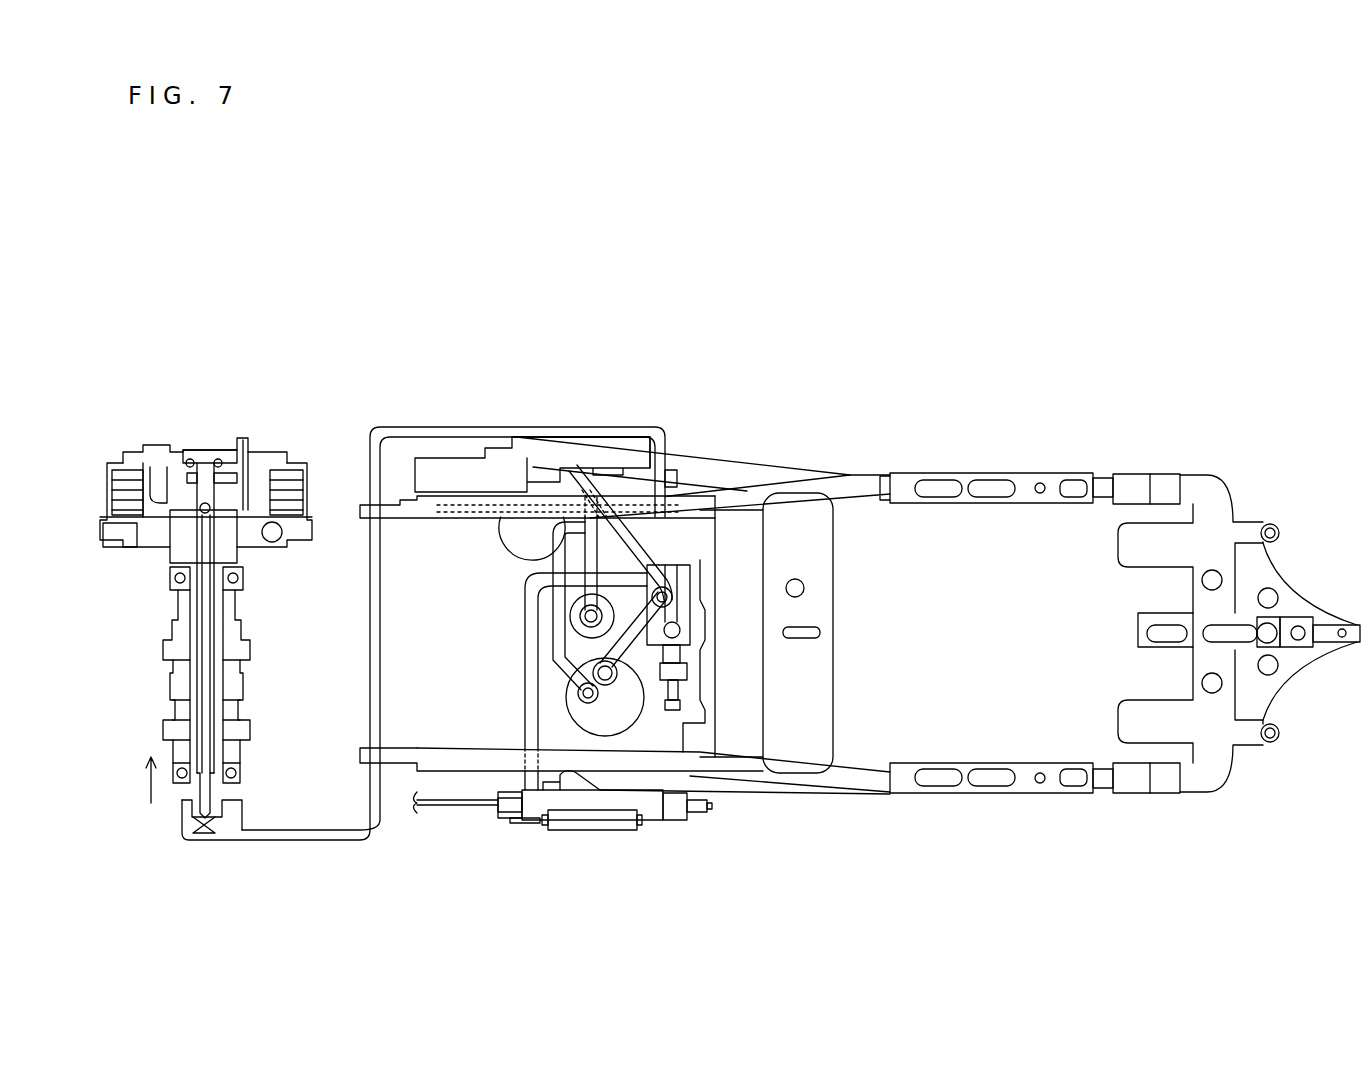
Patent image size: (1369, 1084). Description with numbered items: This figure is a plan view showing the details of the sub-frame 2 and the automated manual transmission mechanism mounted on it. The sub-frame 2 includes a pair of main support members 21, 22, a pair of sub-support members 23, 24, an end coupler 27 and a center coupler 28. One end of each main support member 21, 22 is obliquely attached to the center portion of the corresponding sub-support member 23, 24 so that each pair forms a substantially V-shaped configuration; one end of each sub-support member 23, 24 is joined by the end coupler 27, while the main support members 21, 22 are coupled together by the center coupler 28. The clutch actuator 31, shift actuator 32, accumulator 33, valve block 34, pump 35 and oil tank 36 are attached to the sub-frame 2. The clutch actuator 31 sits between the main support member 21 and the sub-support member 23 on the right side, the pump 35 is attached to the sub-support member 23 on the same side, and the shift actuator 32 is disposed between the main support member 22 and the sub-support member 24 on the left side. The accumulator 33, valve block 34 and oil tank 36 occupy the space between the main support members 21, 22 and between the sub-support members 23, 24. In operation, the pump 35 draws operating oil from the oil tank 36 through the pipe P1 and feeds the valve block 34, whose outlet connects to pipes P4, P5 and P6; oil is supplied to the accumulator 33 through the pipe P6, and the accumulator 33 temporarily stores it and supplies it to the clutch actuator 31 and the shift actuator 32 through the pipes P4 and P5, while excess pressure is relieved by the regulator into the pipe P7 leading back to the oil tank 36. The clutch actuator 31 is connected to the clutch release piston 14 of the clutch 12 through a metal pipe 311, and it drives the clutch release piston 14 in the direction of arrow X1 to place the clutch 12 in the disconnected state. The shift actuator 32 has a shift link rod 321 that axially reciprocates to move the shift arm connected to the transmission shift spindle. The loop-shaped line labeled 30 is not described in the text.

The sub-frame 2 is at (1098, 259).
The clutch 12 is at (112, 500).
The clutch release piston 14 is at (198, 838).
The main support member 21 is at (736, 487).
The main support member 22 is at (768, 775).
The sub-support member 23 is at (688, 445).
The sub-support member 24 is at (734, 790).
The end coupler 27 is at (1228, 578).
The center coupler 28 is at (835, 678).
The pipe 30 is at (395, 628).
The clutch actuator 31 is at (466, 468).
The metal pipe 311 is at (554, 440).
The shift actuator 32 is at (606, 795).
The shift link rod 321 is at (440, 805).
The accumulator 33 is at (574, 626).
The valve block 34 is at (698, 578).
The pump 35 is at (520, 528).
The oil tank 36 is at (604, 722).
The pipe P1 is at (627, 647).
The pipe P4 is at (675, 610).
The pipe P5 is at (523, 717).
The pipe P6 is at (592, 570).
The pipe P7 is at (580, 688).
The arrow X1 is at (148, 788).